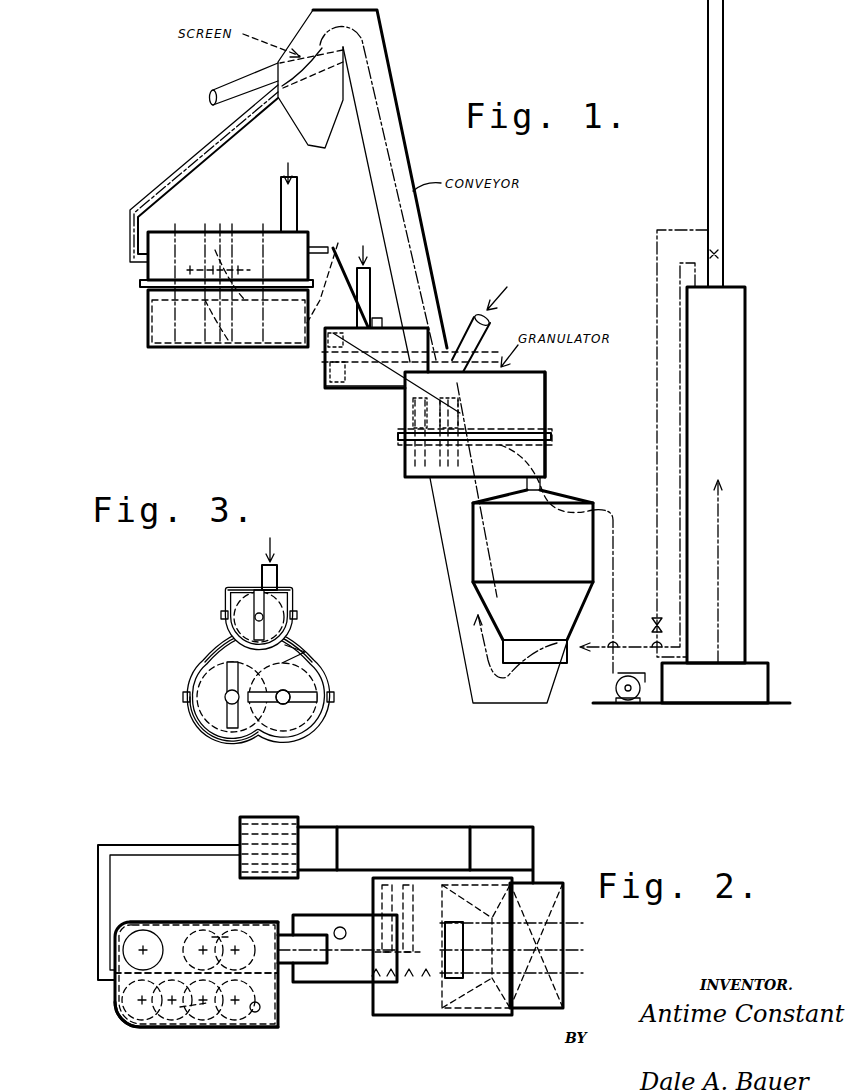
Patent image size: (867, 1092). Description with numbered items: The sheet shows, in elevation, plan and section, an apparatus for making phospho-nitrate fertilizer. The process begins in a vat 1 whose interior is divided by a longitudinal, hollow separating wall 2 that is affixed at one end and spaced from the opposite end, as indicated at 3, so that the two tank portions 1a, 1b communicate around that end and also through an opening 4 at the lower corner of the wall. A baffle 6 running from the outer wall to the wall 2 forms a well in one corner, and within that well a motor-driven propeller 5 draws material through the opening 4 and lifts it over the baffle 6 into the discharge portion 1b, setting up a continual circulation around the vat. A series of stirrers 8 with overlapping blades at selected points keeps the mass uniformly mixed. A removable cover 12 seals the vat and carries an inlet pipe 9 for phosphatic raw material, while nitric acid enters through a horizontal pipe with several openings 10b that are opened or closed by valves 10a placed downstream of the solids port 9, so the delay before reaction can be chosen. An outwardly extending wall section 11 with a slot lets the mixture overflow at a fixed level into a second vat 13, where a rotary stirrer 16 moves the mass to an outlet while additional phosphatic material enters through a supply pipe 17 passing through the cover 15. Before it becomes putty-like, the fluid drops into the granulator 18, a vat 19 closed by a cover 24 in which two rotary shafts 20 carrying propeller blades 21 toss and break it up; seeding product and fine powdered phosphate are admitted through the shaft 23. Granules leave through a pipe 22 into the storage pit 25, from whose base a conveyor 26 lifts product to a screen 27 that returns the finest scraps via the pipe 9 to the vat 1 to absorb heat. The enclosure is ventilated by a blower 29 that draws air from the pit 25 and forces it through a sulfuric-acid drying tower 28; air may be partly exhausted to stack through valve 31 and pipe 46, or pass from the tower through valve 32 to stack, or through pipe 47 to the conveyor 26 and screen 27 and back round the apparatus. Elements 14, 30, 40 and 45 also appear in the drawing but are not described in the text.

In FIG. 1, the vat 1 is at (182, 315).
In FIG. 2, the vat 1 is at (115, 998).
In FIG. 2, the tank portion 1a is at (262, 1027).
In FIG. 2, the discharge portion of tank 1b is at (262, 927).
In FIG. 2, the separating wall 2 is at (180, 970).
In FIG. 1, the spacing 3 is at (292, 328).
In FIG. 2, the spacing 3 is at (270, 975).
In FIG. 1, the opening 4 is at (163, 335).
In FIG. 2, the propeller 5 is at (138, 933).
In FIG. 2, the baffle 6 is at (157, 970).
In FIG. 1, the stirrers 8 is at (205, 232).
In FIG. 2, the stirrers 8 is at (232, 937).
In FIG. 1, the inlet pipe 9 is at (297, 206).
In FIG. 2, the inlet pipe 9 is at (262, 1008).
In FIG. 1, the valves 10a is at (220, 232).
In FIG. 1, the openings 10b is at (232, 328).
In FIG. 2, the openings 10b is at (207, 1003).
In FIG. 1, the wall section 11 is at (337, 272).
In FIG. 2, the wall section 11 is at (285, 935).
In FIG. 1, the removable cover 12 is at (157, 232).
In FIG. 1, the second vat 13 is at (360, 380).
In FIG. 2, the second vat 13 is at (345, 948).
In FIG. 1, the feed chute 14 is at (375, 388).
In FIG. 3, the feed chute 14 is at (305, 652).
In FIG. 1, the cover 15 is at (383, 320).
In FIG. 3, the cover 15 is at (250, 590).
In FIG. 1, the rotary stirrer 16 is at (328, 387).
In FIG. 3, the rotary stirrer 16 is at (262, 602).
In FIG. 1, the supply pipe 17 is at (360, 284).
In FIG. 3, the supply pipe 17 is at (278, 576).
In FIG. 2, the supply pipe 17 is at (341, 927).
In FIG. 1, the granulator 18 is at (475, 424).
In FIG. 3, the granulator 18 is at (322, 664).
In FIG. 2, the granulator 18 is at (442, 946).
In FIG. 1, the granulator vat 19 is at (407, 479).
In FIG. 3, the granulator vat 19 is at (212, 740).
In FIG. 1, the rotary shafts 20 is at (487, 437).
In FIG. 3, the rotary shafts 20 is at (228, 700).
In FIG. 2, the rotary shafts 20 is at (370, 973).
In FIG. 1, the propeller blades 21 is at (422, 483).
In FIG. 3, the propeller blades 21 is at (283, 692).
In FIG. 2, the propeller blades 21 is at (390, 887).
In FIG. 1, the discharge pipe 22 is at (535, 483).
In FIG. 2, the discharge pipe 22 is at (510, 938).
In FIG. 1, the shaft 23 is at (467, 313).
In FIG. 2, the shaft 23 is at (457, 937).
In FIG. 1, the cover 24 is at (545, 402).
In FIG. 3, the cover 24 is at (200, 648).
In FIG. 1, the storage pit 25 is at (533, 576).
In FIG. 2, the storage pit 25 is at (511, 945).
In FIG. 1, the conveyor 26 is at (410, 225).
In FIG. 2, the conveyor 26 is at (445, 835).
In FIG. 1, the screen 27 is at (300, 127).
In FIG. 2, the screen 27 is at (280, 817).
In FIG. 1, the drying tower 28 is at (691, 495).
In FIG. 1, the blower 29 is at (630, 703).
In FIG. 1, the exhaust pipe 30 is at (718, 90).
In FIG. 1, the valve 31 is at (653, 623).
In FIG. 1, the valve 32 is at (720, 253).
In FIG. 1, the return pipe 40 is at (196, 158).
In FIG. 2, the return pipe 40 is at (180, 850).
In FIG. 1, the air duct 45 is at (615, 567).
In FIG. 1, the pipe 46 is at (657, 425).
In FIG. 1, the pipe 47 is at (680, 380).